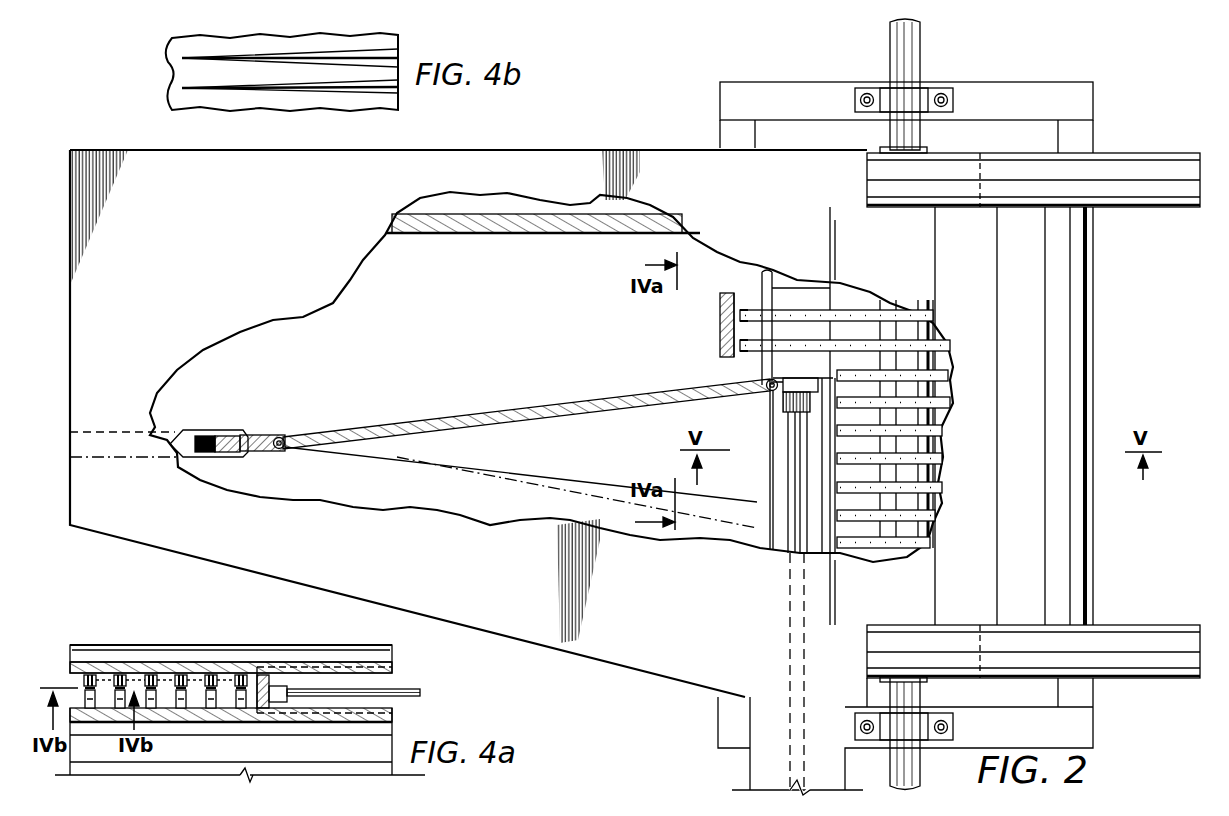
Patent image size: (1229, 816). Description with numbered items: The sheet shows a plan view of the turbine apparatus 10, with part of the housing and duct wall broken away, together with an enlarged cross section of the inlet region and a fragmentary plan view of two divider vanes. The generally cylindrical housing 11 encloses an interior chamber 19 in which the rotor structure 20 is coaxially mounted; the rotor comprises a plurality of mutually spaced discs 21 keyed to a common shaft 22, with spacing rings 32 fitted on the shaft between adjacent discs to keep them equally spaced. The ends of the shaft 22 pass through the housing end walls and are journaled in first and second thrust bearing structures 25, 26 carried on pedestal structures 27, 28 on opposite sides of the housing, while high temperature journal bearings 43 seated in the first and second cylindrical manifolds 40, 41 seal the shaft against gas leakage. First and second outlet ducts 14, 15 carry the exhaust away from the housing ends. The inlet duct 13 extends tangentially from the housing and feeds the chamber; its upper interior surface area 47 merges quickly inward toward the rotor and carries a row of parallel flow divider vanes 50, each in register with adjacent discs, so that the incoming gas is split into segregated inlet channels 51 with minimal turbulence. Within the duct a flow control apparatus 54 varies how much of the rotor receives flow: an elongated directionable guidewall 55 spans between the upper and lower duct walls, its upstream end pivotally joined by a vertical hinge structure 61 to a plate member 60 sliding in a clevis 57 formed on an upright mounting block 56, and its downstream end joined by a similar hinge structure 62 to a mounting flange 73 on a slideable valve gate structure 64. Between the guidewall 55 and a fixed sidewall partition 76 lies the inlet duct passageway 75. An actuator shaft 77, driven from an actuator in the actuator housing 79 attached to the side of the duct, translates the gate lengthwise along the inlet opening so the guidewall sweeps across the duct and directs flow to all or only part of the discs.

In FIG. 2, the turbine apparatus 10 is at (1027, 56).
In FIG. 2, the housing 11 is at (1100, 322).
In FIG. 4a, the housing 11 is at (285, 642).
In FIG. 2, the inlet duct 13 is at (541, 148).
In FIG. 4a, the inlet duct 13 is at (100, 660).
In FIG. 2, the first outlet duct 14 is at (1140, 670).
In FIG. 2, the second outlet duct 15 is at (1140, 158).
In FIG. 2, the interior chamber 19 is at (750, 286).
In FIG. 2, the rotor structure 20 is at (932, 326).
In FIG. 2, the discs 21 is at (716, 332).
In FIG. 4a, the discs 21 is at (215, 705).
In FIG. 2, the shaft 22 is at (900, 762).
In FIG. 2, the first thrust bearing structure 25 is at (916, 755).
In FIG. 2, the second thrust bearing structure 26 is at (913, 95).
In FIG. 2, the pedestal structure 27 is at (1082, 725).
In FIG. 2, the pedestal structure 28 is at (776, 88).
In FIG. 2, the spacing rings 32 is at (935, 390).
In FIG. 2, the first cylindrical manifold 40 is at (978, 655).
In FIG. 2, the second cylindrical manifold 41 is at (979, 162).
In FIG. 2, the journal bearings 43 is at (880, 149).
In FIG. 4a, the upper interior surface area 47 is at (150, 678).
In FIG. 4b, the upper interior surface area 47 is at (186, 100).
In FIG. 4a, the flow divider vanes 50 is at (230, 678).
In FIG. 4b, the flow divider vanes 50 is at (178, 88).
In FIG. 4a, the inlet channels 51 is at (165, 702).
In FIG. 2, the flow control apparatus 54 is at (604, 382).
In FIG. 2, the directionable guidewall 55 is at (556, 400).
In FIG. 4a, the directionable guidewall 55 is at (252, 706).
In FIG. 2, the mounting block 56 is at (180, 433).
In FIG. 2, the clevis 57 is at (211, 432).
In FIG. 2, the plate member 60 is at (264, 433).
In FIG. 2, the hinge structure 61 is at (280, 450).
In FIG. 2, the hinge structure 62 is at (762, 383).
In FIG. 2, the valve gate structure 64 is at (770, 495).
In FIG. 4a, the valve gate structure 64 is at (392, 668).
In FIG. 2, the mounting flange 73 is at (780, 393).
In FIG. 2, the inlet duct passageway 75 is at (508, 328).
In FIG. 2, the fixed sidewall partition 76 is at (461, 235).
In FIG. 2, the actuator shaft 77 is at (788, 462).
In FIG. 4a, the actuator shaft 77 is at (420, 696).
In FIG. 2, the actuator housing 79 is at (768, 756).